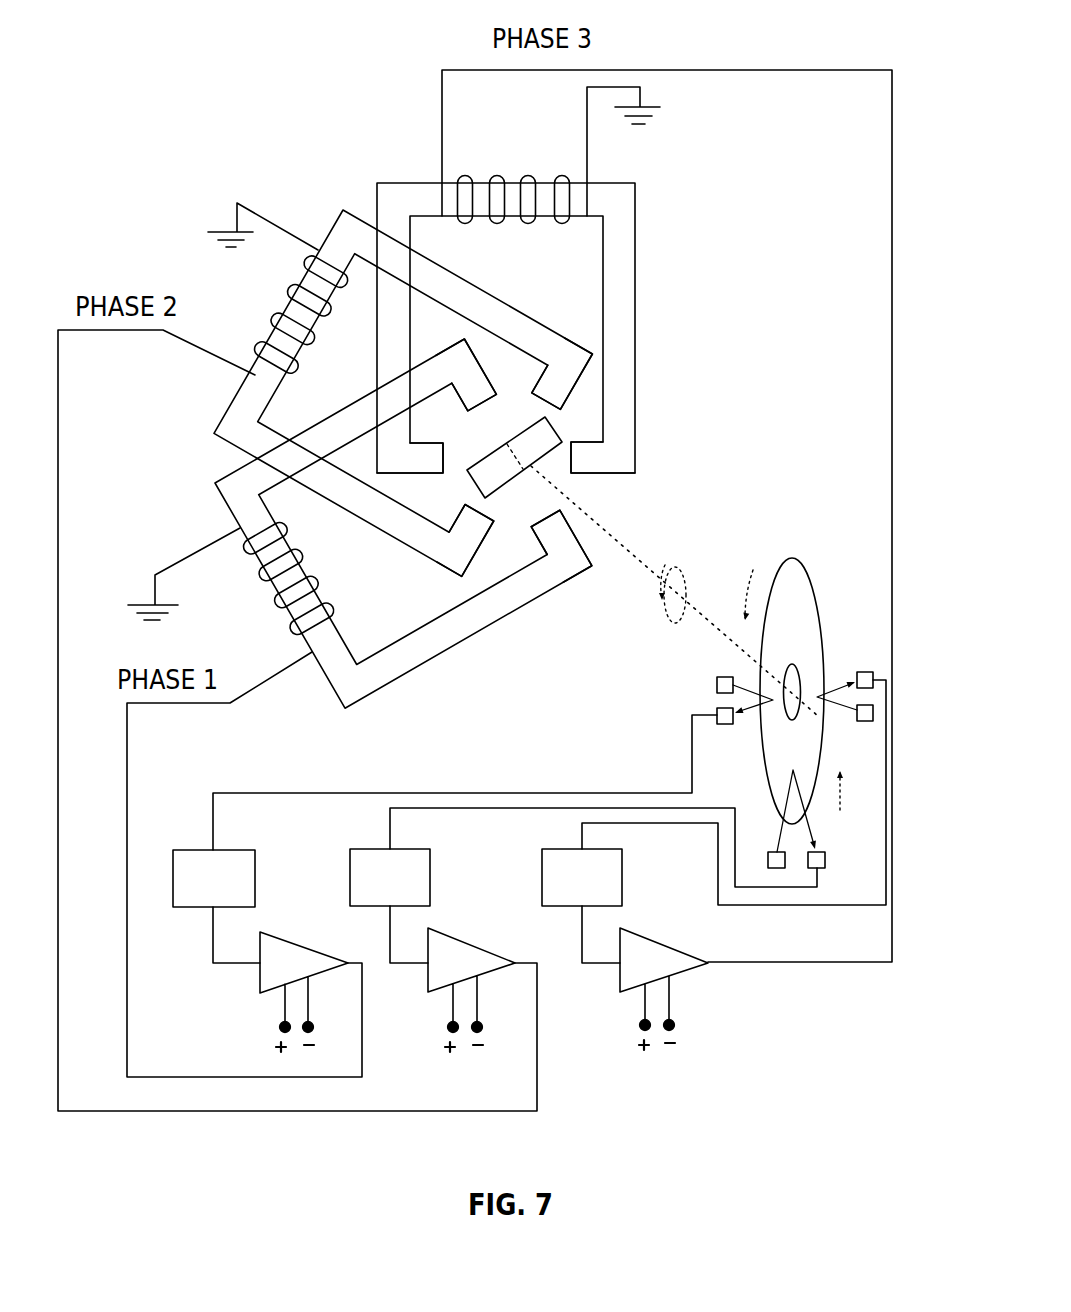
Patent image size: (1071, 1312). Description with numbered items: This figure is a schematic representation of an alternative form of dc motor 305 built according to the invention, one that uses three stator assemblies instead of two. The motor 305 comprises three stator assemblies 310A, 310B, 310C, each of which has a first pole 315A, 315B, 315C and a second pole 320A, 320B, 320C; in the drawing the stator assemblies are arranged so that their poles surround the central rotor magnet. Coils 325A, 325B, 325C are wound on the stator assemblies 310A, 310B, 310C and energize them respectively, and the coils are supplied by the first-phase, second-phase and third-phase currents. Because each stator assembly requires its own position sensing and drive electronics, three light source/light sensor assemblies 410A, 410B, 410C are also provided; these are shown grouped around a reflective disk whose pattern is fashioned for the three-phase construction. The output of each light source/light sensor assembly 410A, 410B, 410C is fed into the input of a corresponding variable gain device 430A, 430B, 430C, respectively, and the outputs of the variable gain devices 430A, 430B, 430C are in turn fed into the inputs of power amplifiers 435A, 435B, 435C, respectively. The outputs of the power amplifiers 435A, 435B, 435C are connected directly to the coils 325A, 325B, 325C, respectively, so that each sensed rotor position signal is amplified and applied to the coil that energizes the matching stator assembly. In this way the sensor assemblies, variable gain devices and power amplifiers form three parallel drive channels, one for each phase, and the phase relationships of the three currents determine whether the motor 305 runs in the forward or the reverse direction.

The motor 305 is at (752, 401).
The stator assembly 310A is at (460, 646).
The stator assembly 310B is at (350, 204).
The stator assembly 310C is at (638, 304).
The first pole 315A is at (477, 387).
The first pole 315B is at (555, 385).
The first pole 315C is at (593, 458).
The second pole 320A is at (555, 523).
The second pole 320B is at (476, 533).
The second pole 320C is at (427, 457).
The coil 325A is at (292, 636).
The coil 325B is at (272, 327).
The coil 325C is at (560, 175).
The light source/light sensor assembly 410A is at (701, 693).
The light source/light sensor assembly 410B is at (762, 840).
The light source/light sensor assembly 410C is at (846, 652).
The variable gain device 430A is at (253, 862).
The variable gain device 430B is at (425, 863).
The variable gain device 430C is at (617, 885).
The power amplifier 435A is at (265, 980).
The power amplifier 435B is at (432, 981).
The power amplifier 435C is at (683, 966).